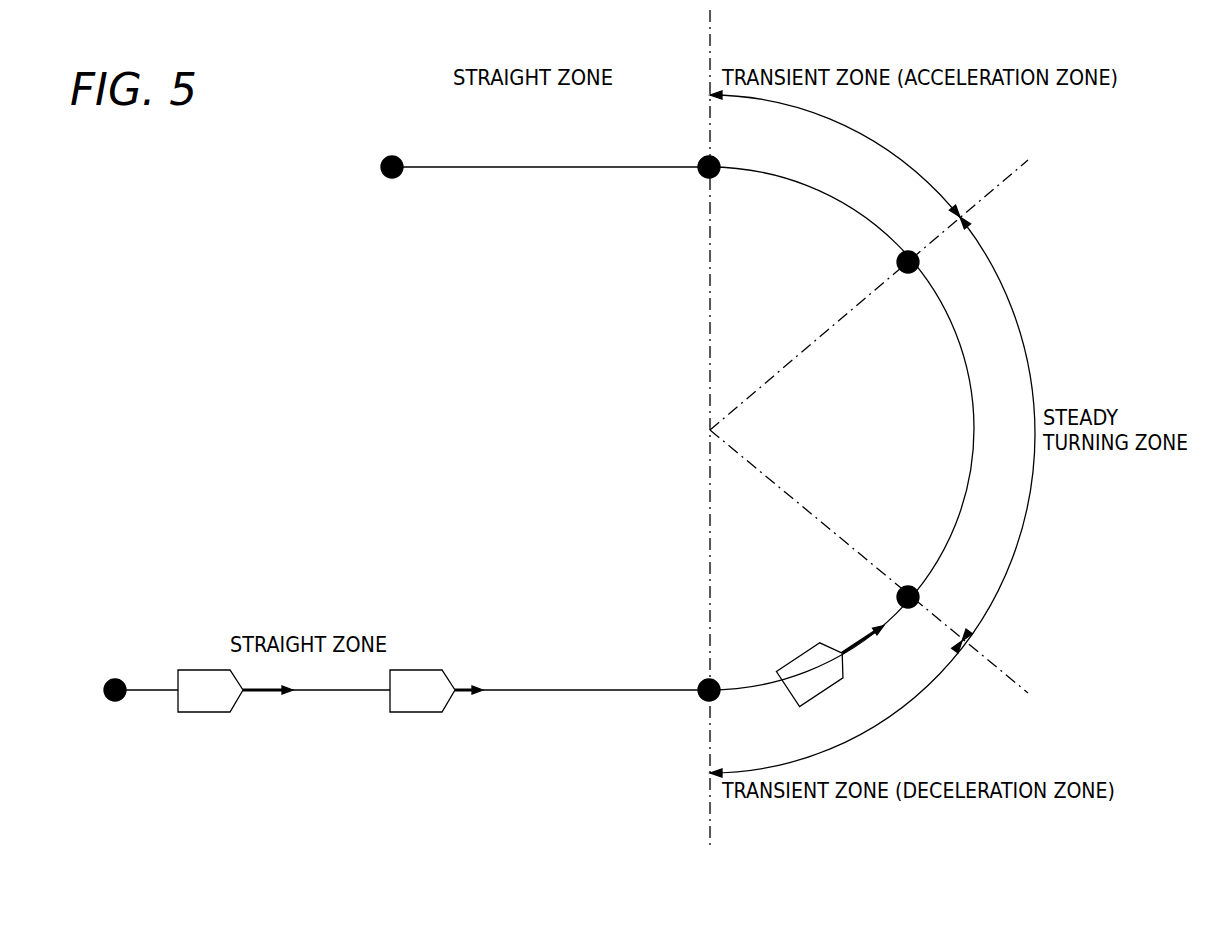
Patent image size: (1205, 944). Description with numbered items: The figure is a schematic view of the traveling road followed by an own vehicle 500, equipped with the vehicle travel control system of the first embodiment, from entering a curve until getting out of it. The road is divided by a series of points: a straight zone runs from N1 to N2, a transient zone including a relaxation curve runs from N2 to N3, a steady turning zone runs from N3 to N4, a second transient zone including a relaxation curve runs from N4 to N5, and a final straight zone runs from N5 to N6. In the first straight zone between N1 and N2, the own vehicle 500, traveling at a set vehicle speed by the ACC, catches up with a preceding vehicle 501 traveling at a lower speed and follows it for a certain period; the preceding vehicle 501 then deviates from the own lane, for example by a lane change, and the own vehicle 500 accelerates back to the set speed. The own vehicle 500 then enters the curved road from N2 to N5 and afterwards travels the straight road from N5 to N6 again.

The own vehicle 500 is at (212, 700).
The preceding vehicle 501 is at (423, 700).
The node N1 is at (116, 676).
The node N2 is at (709, 677).
The node N3 is at (909, 581).
The node N4 is at (909, 246).
The node N5 is at (708, 152).
The node N6 is at (391, 152).